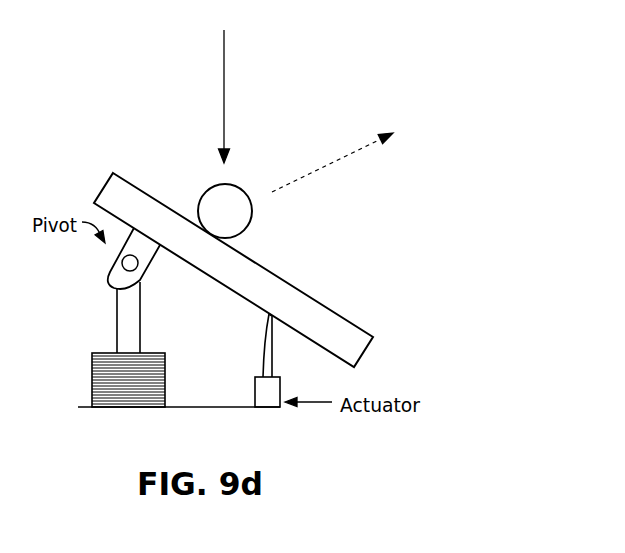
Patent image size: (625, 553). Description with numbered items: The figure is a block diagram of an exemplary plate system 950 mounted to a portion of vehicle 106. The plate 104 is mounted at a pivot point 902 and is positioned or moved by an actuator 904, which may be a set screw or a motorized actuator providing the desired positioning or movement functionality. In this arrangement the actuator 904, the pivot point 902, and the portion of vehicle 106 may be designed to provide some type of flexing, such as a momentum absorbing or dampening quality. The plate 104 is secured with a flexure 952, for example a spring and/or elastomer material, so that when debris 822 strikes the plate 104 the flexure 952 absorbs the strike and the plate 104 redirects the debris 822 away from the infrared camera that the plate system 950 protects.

The plate 104 is at (323, 302).
The debris 822 is at (253, 212).
The pivot point 902 is at (78, 263).
The vehicle 106 is at (117, 328).
The flexure 952 is at (68, 382).
The actuator 904 is at (235, 384).
The plate system 950 is at (358, 451).